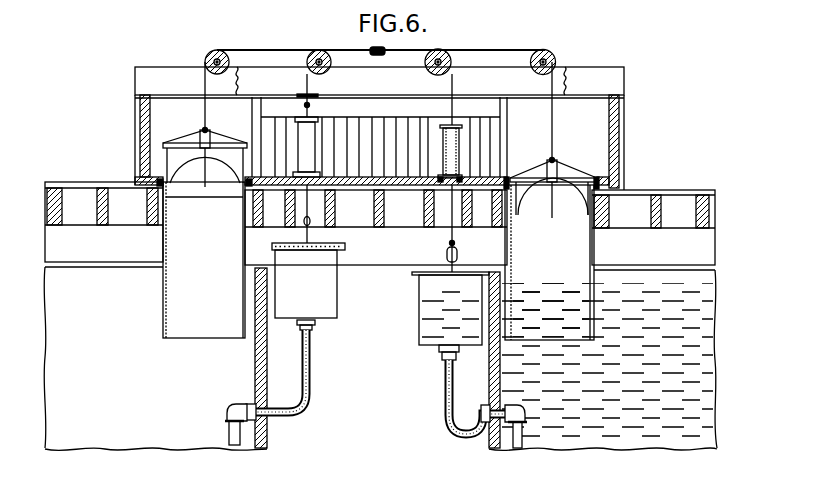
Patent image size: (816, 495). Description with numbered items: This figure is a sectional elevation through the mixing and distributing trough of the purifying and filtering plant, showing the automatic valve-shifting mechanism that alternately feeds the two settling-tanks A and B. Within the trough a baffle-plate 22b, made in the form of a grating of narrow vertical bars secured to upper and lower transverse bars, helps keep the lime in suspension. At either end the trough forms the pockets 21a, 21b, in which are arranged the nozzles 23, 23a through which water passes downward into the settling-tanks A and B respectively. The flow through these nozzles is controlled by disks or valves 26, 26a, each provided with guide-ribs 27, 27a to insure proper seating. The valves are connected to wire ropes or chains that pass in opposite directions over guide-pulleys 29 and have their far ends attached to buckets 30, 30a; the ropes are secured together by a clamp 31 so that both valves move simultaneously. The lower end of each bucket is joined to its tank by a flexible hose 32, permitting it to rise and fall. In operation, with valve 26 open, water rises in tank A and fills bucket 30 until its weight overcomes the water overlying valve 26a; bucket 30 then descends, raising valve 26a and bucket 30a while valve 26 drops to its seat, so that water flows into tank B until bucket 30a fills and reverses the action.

The pocket 21a is at (140, 128).
The pocket 21b is at (624, 128).
The baffle-plate 22b is at (372, 129).
The nozzle 23 is at (162, 245).
The nozzle 23a is at (595, 250).
The valve 26 is at (270, 50).
The valve 26a is at (565, 170).
The guide-rib 27 is at (204, 260).
The guide-rib 27a is at (551, 218).
The guide-pulley 29 is at (323, 70).
The bucket 30 is at (330, 288).
The bucket 30a is at (419, 320).
The clamp 31 is at (379, 56).
The hose 32 is at (311, 390).
The settling-tank A is at (155, 359).
The settling-tank B is at (603, 360).